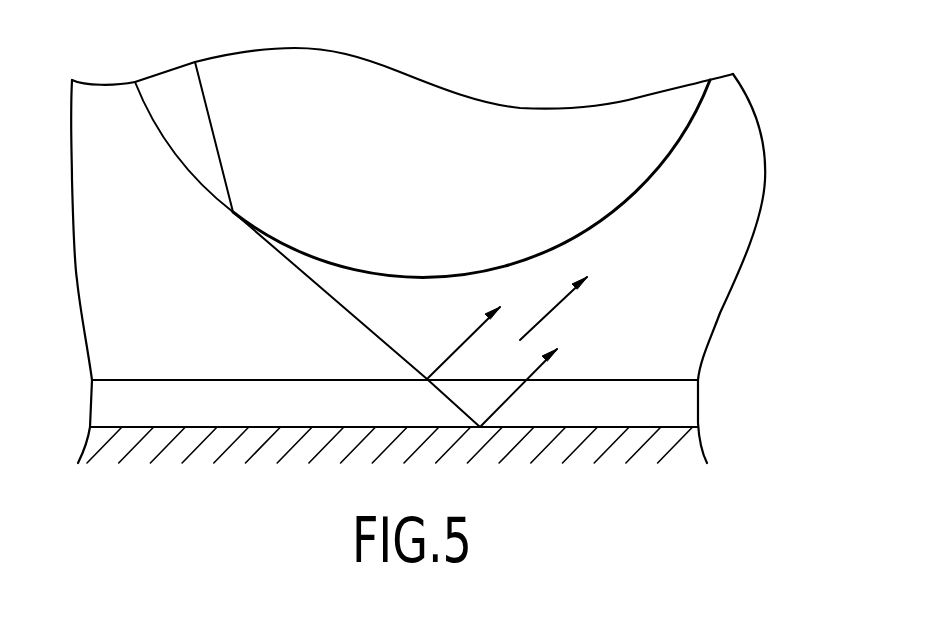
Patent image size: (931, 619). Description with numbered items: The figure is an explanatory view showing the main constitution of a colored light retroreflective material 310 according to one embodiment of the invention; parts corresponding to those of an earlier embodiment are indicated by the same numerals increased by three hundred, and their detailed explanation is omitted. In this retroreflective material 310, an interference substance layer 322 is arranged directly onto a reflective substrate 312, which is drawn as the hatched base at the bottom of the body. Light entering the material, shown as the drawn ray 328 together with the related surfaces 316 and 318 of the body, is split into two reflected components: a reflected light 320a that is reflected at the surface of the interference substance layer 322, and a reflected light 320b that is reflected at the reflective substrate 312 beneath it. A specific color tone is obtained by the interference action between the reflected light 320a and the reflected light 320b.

The retroreflective material 310 is at (622, 43).
The reflective substrate 312 is at (618, 505).
The curved reflective surface 316 is at (652, 145).
The wedge section 318 is at (209, 113).
The reflected light 320a is at (460, 345).
The reflected light 320b is at (516, 390).
The interference substance layer 322 is at (685, 402).
The light ray 328 is at (558, 315).